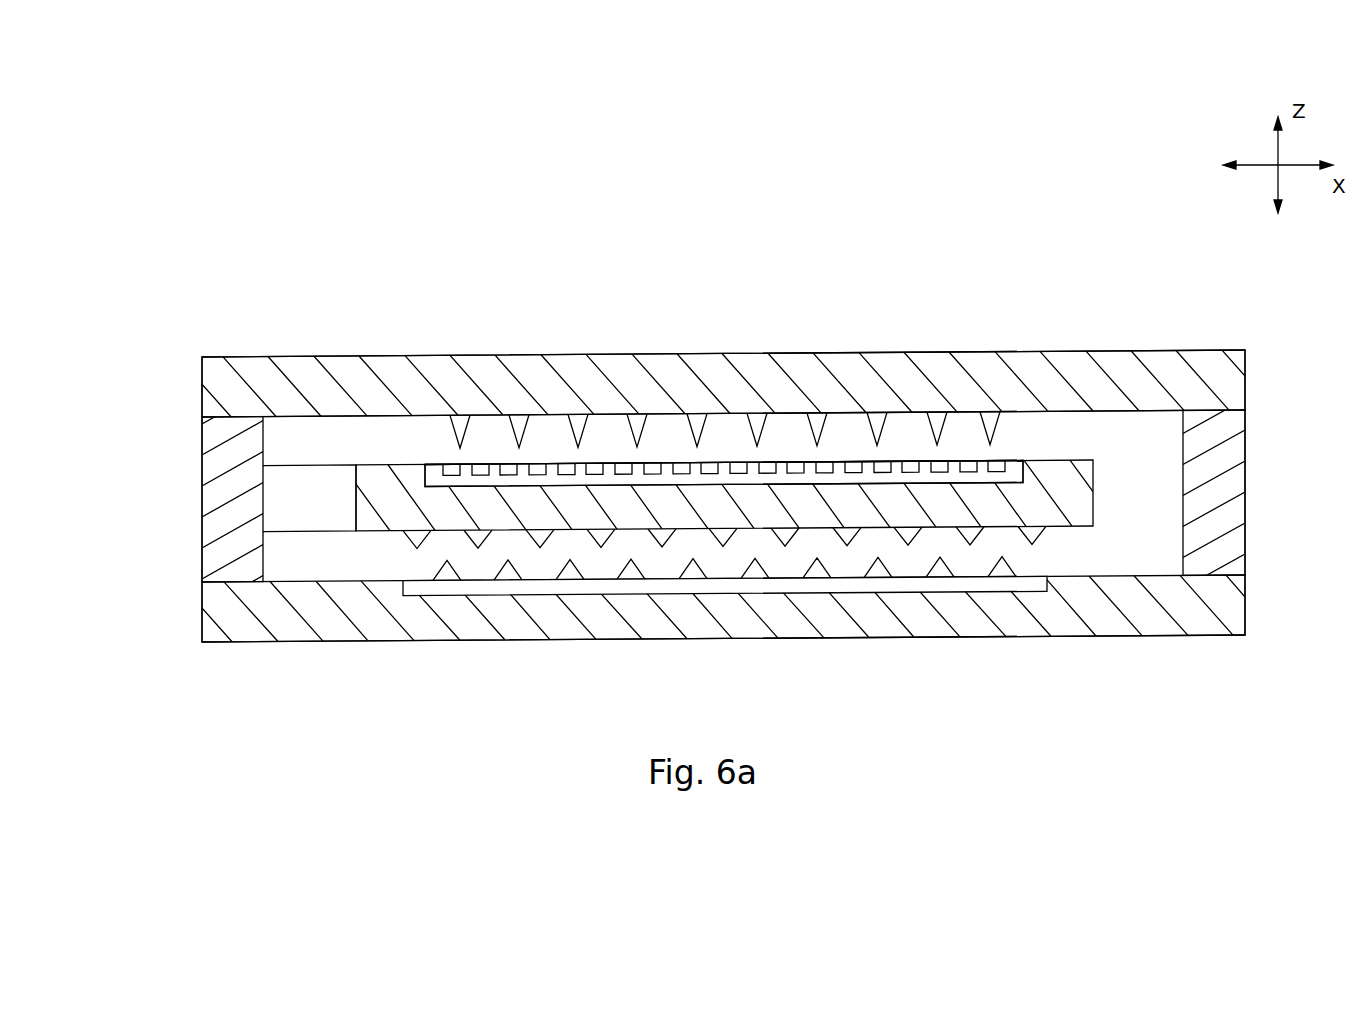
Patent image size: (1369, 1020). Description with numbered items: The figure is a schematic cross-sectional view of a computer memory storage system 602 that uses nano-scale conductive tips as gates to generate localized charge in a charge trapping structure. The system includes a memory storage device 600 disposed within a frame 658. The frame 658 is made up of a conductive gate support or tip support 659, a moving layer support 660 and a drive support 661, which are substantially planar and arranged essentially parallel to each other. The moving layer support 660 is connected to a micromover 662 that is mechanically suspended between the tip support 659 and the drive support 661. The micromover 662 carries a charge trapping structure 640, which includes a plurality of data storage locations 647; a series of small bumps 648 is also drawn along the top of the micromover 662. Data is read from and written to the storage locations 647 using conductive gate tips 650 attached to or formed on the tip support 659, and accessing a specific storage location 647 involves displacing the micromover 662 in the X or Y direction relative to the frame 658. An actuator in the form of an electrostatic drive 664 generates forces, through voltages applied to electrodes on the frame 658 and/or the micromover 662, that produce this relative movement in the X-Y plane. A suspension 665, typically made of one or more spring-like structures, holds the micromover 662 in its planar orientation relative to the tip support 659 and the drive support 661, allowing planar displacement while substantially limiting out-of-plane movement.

The memory storage device 600 is at (750, 456).
The computer memory storage system 602 is at (341, 269).
The charge trapping structure 640 is at (1012, 465).
The data storage locations 647 is at (622, 465).
The solder bumps 648 is at (897, 465).
The conductive gate tips 650 is at (460, 435).
The frame 658 is at (438, 321).
The tip support 659 is at (202, 401).
The moving layer support 660 is at (202, 466).
The drive support 661 is at (202, 604).
The micromover 662 is at (1075, 497).
The electrostatic drive 664 is at (548, 598).
The suspension 665 is at (297, 500).